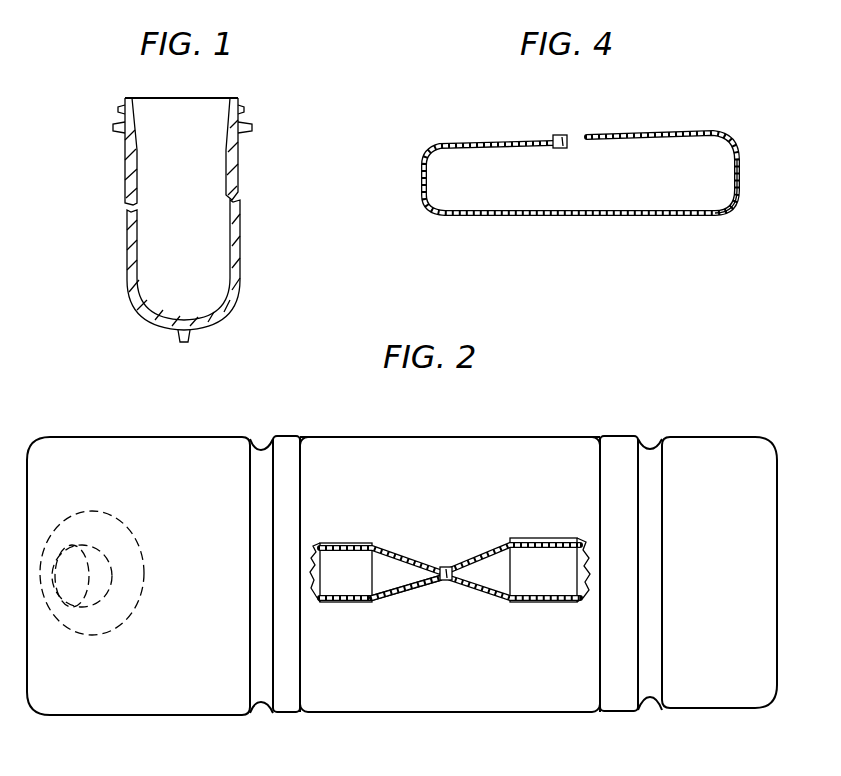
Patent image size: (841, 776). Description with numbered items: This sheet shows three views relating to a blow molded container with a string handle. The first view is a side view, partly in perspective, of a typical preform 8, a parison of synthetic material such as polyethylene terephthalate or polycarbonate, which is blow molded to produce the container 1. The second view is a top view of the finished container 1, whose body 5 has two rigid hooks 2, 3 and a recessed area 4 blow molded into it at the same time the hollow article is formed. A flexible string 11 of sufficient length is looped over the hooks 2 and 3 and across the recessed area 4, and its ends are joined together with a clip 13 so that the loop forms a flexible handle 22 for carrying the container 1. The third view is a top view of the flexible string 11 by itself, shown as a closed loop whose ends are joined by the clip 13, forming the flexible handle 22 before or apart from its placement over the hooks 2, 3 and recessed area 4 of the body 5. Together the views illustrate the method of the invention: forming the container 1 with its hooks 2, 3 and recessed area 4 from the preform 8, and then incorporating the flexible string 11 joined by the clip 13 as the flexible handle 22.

In FIG. 2, the container 1 is at (617, 450).
In FIG. 2, the hook 2 is at (330, 575).
In FIG. 2, the hook 3 is at (536, 570).
In FIG. 2, the recessed area 4 is at (388, 450).
In FIG. 2, the body 5 is at (462, 448).
In FIG. 1, the preform 8 is at (140, 163).
In FIG. 4, the flexible string 11 is at (707, 131).
In FIG. 2, the flexible string 11 is at (385, 556).
In FIG. 4, the clip 13 is at (557, 135).
In FIG. 2, the clip 13 is at (444, 568).
In FIG. 4, the flexible handle 22 is at (737, 157).
In FIG. 2, the flexible handle 22 is at (415, 580).